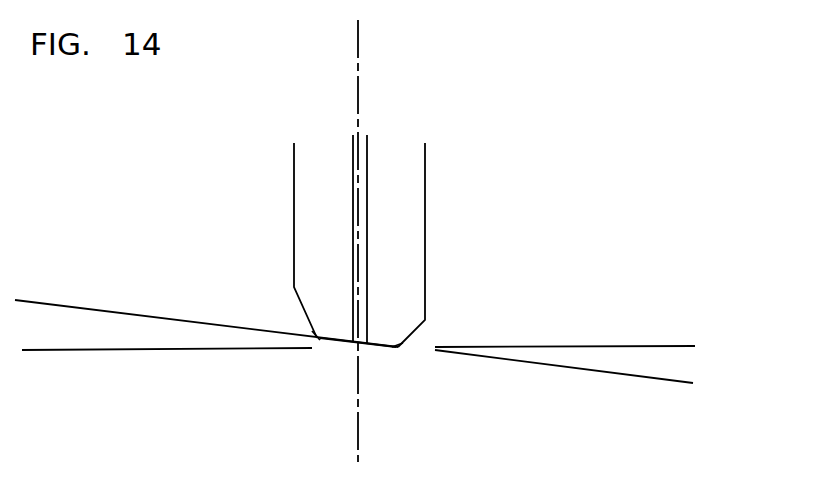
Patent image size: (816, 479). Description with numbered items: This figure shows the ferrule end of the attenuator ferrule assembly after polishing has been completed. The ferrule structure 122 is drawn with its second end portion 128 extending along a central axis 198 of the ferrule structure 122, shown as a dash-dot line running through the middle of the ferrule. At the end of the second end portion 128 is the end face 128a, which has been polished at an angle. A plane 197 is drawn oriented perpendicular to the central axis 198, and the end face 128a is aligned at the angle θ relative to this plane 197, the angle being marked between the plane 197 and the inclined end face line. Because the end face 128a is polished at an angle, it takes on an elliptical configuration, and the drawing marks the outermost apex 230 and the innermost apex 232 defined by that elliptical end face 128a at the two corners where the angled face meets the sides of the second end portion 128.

The central axis 198 is at (358, 58).
The ferrule structure 122 is at (284, 196).
The second end portion 128 is at (425, 183).
The end face 128a is at (387, 345).
The plane 197 is at (170, 350).
The outermost apex 230 is at (398, 347).
The innermost apex 232 is at (317, 338).